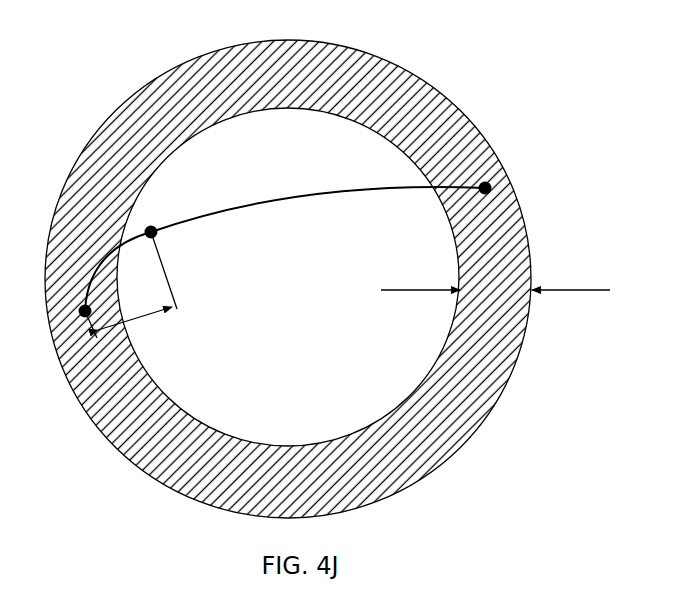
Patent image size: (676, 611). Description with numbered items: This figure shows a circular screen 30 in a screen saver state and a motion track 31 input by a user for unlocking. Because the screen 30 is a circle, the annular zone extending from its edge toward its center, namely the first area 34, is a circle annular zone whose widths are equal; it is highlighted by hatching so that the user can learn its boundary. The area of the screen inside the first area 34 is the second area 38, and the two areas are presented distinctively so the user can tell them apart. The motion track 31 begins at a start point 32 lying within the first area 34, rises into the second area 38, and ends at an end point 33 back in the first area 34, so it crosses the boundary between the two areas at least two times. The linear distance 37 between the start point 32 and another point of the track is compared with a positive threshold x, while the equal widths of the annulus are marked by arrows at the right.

The screen 30 is at (247, 43).
The motion track 31 is at (288, 202).
The start point 32 is at (79, 315).
The end point 33 is at (490, 192).
The first area 34 is at (437, 428).
The linear distance 37 is at (155, 318).
The second area 38 is at (218, 172).